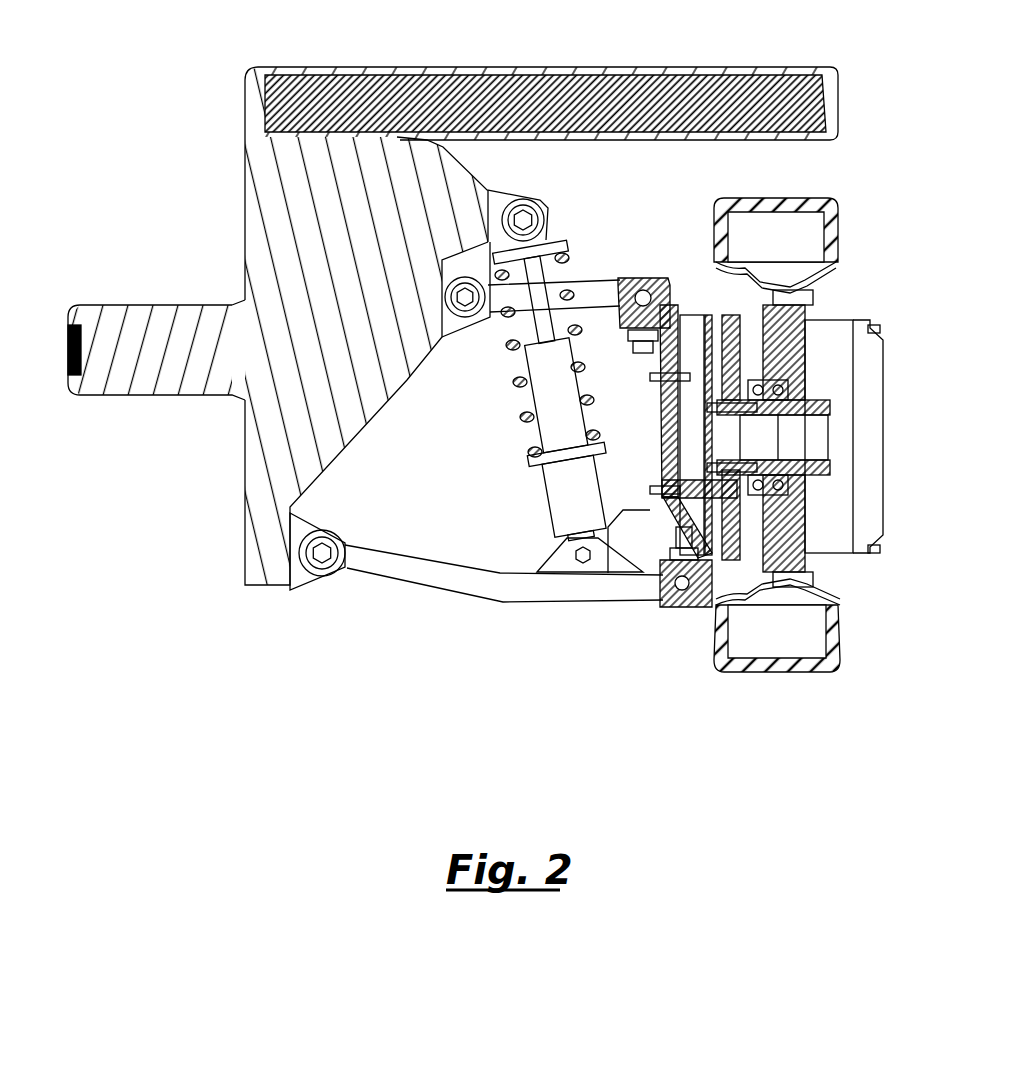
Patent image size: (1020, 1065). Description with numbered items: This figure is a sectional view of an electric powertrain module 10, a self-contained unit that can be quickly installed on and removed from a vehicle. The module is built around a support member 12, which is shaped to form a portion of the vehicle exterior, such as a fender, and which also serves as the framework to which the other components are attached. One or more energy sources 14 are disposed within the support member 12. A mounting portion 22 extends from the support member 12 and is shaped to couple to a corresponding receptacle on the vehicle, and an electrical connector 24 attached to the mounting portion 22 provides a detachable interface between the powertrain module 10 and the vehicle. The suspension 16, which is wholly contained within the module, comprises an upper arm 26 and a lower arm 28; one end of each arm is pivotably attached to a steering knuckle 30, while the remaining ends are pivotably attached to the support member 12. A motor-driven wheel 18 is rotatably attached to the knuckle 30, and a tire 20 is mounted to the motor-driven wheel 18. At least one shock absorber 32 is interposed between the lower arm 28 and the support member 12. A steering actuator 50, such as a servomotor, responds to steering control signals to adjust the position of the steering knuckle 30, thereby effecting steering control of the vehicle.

The electric powertrain module 10 is at (226, 44).
The support member 12 is at (365, 432).
The energy sources 14 is at (827, 86).
The suspension 16 is at (492, 362).
The motor-driven wheel 18 is at (838, 357).
The tire 20 is at (748, 674).
The mounting portion 22 is at (158, 396).
The electrical connector 24 is at (74, 326).
The upper arm 26 is at (594, 282).
The lower arm 28 is at (484, 584).
The steering knuckle 30 is at (660, 395).
The shock absorber 32 is at (537, 487).
The steering actuator 50 is at (638, 511).